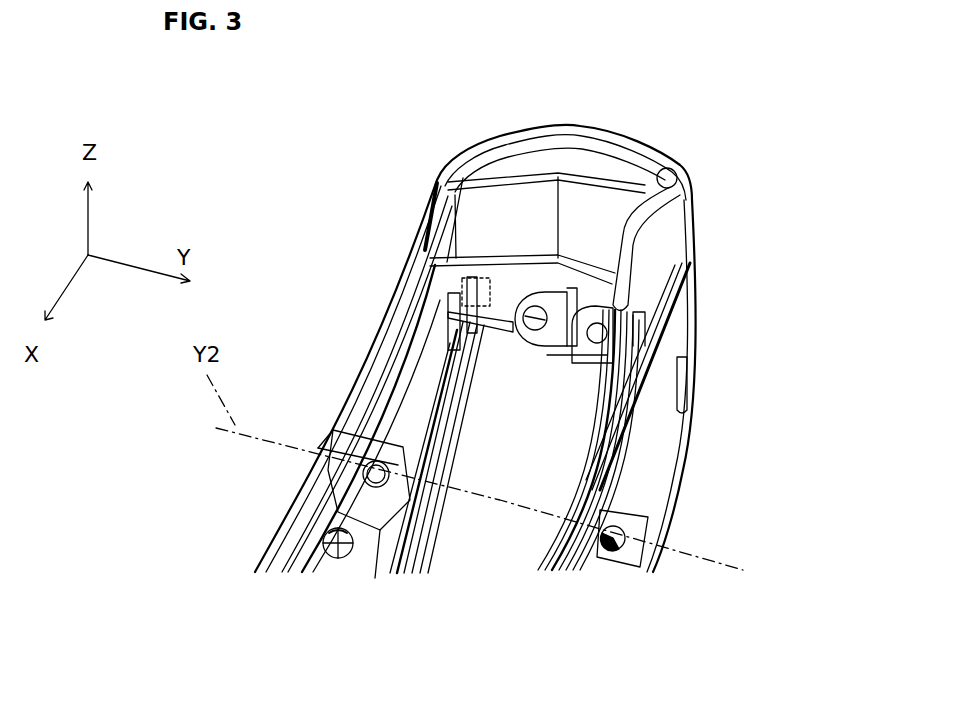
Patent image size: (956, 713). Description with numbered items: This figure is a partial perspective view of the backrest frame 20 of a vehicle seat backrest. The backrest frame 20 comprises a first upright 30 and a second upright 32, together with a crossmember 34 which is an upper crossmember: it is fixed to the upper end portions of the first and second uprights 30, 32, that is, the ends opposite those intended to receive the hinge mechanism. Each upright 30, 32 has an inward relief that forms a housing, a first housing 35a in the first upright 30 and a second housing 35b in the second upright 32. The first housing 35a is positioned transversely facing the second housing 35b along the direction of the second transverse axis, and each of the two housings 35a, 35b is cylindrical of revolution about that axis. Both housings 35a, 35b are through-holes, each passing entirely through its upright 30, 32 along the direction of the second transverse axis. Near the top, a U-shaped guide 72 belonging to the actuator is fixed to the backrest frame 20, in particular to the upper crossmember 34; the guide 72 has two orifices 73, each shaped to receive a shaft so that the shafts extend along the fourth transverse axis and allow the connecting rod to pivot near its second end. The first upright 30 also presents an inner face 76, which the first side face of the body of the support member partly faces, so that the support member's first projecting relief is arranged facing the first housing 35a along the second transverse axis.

The backrest frame 20 is at (453, 95).
The first upright 30 is at (413, 383).
The second upright 32 is at (665, 450).
The crossmember 34 is at (610, 157).
The first housing 35a is at (382, 498).
The second housing 35b is at (607, 553).
The U-shaped guide 72 is at (557, 360).
The orifice 73 is at (553, 312).
The inner face 76 is at (389, 409).